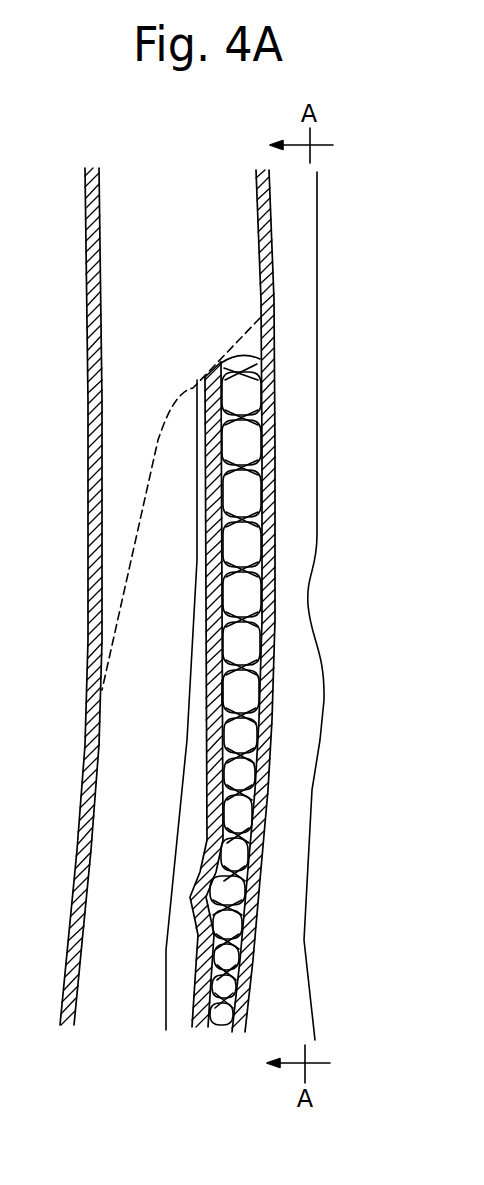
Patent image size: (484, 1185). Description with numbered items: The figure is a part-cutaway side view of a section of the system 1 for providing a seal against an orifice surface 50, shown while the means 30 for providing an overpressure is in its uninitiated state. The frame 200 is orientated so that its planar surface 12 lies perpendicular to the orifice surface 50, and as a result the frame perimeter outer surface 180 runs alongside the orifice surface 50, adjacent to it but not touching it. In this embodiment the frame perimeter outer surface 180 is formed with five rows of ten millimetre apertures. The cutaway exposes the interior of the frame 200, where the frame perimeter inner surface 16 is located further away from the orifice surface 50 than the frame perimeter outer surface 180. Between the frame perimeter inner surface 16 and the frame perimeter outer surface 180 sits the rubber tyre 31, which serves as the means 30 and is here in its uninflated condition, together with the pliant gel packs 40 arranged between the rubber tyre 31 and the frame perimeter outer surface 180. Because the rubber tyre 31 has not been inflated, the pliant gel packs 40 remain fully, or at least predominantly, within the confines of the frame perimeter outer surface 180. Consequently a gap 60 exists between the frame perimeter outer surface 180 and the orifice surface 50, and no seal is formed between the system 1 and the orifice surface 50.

The system 1 is at (72, 641).
The planar surface 12 is at (178, 326).
The frame perimeter inner surface 16 is at (195, 620).
The means for providing an overpressure 30 is at (223, 718).
The rubber tyre 31 is at (223, 691).
The pliant gel packs 40 is at (243, 813).
The orifice surface 50 is at (317, 405).
The gap 60 is at (293, 987).
The frame perimeter outer surface 180 is at (275, 493).
The frame 200 is at (85, 229).